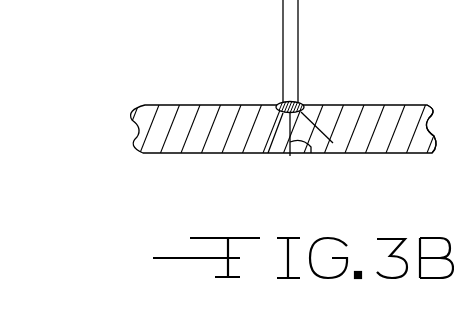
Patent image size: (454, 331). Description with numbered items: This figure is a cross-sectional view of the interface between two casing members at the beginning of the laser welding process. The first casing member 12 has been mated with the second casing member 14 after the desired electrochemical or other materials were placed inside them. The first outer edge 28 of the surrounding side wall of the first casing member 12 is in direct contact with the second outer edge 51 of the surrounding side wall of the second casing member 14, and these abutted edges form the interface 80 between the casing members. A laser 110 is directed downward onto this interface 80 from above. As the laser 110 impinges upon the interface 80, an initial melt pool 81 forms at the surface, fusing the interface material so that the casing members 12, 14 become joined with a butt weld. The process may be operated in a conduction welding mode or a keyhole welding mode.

The first casing member 12 is at (147, 133).
The second casing member 14 is at (427, 128).
The laser 110 is at (282, 47).
The initial melt pool 81 is at (330, 105).
The first outer edge 28 is at (268, 153).
The interface 80 is at (290, 152).
The second outer edge 51 is at (311, 153).